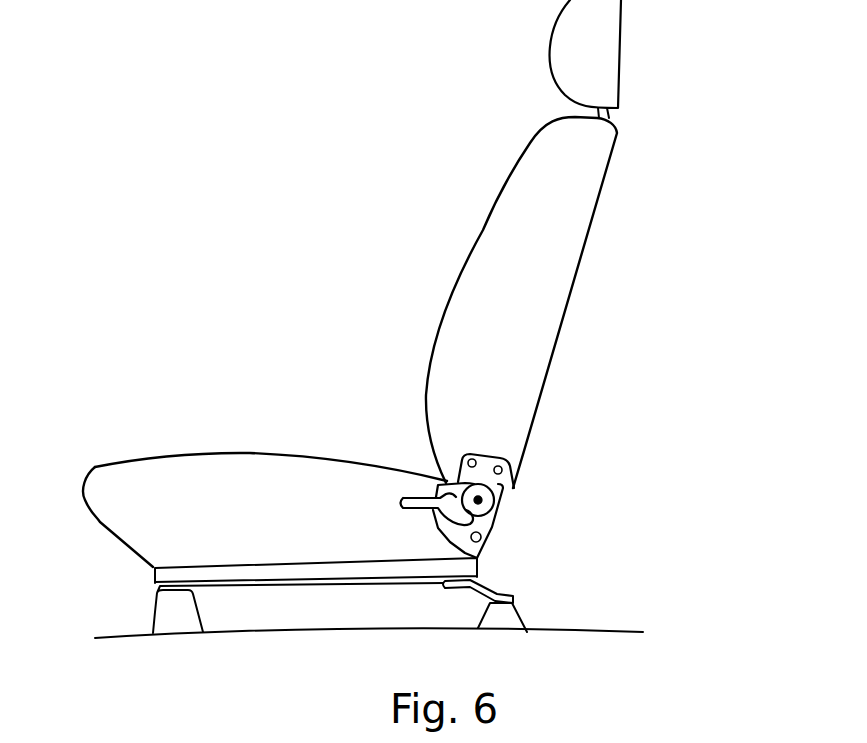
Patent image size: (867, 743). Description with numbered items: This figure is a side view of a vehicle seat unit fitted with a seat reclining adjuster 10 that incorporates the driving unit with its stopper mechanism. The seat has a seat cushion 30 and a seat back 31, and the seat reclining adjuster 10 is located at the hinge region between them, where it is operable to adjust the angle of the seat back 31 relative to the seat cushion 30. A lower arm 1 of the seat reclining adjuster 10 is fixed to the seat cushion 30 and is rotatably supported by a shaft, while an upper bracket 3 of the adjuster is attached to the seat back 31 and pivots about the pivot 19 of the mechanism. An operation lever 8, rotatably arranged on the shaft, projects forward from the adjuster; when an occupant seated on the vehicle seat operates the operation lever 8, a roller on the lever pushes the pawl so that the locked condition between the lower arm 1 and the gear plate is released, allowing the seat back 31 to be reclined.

The lower arm 1 is at (497, 528).
The upper bracket (seatback arm) 3 is at (512, 470).
The operation lever 8 is at (412, 498).
The seat reclining adjuster 10 is at (536, 457).
The pivot shaft 19 is at (503, 502).
The seat cushion 30 is at (262, 453).
The seat back 31 is at (527, 385).